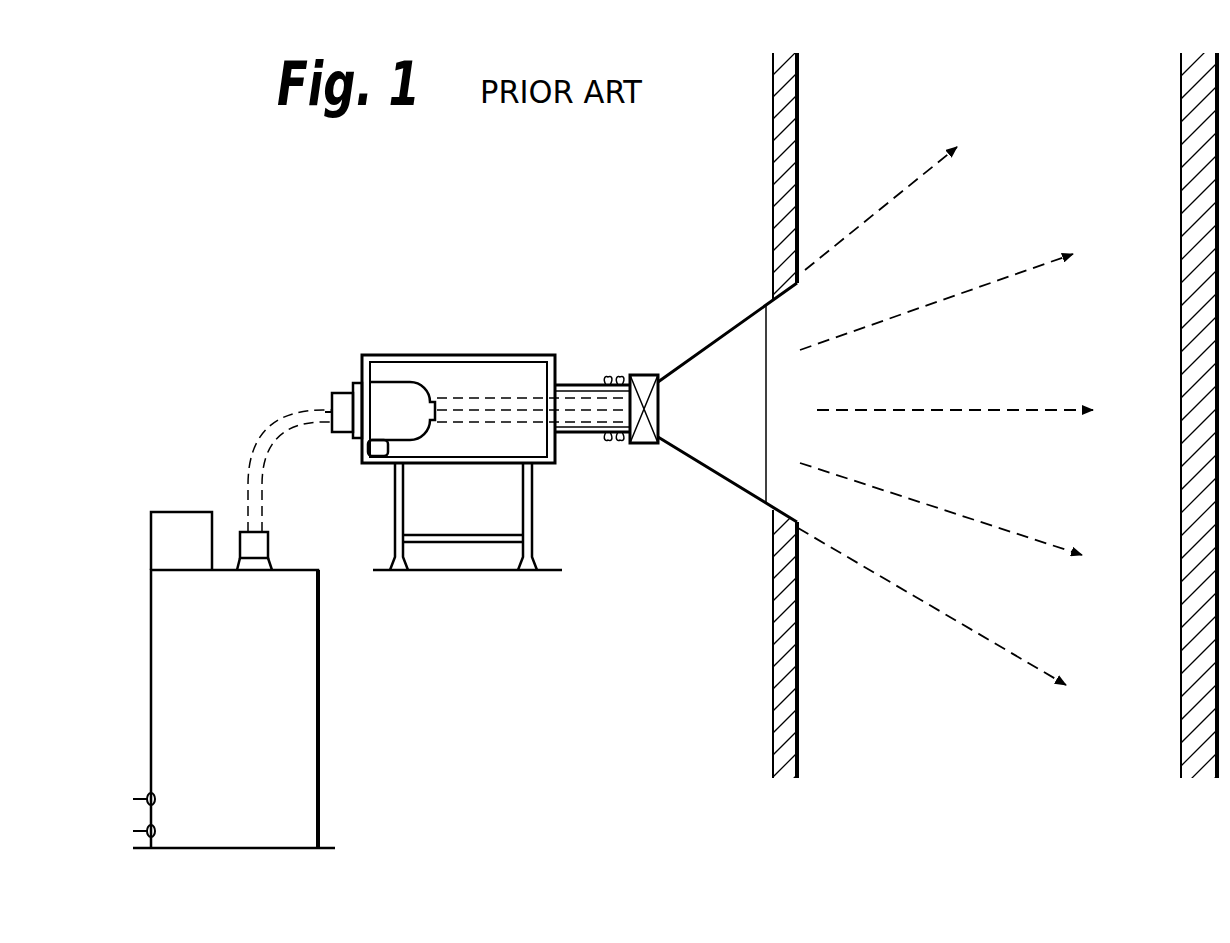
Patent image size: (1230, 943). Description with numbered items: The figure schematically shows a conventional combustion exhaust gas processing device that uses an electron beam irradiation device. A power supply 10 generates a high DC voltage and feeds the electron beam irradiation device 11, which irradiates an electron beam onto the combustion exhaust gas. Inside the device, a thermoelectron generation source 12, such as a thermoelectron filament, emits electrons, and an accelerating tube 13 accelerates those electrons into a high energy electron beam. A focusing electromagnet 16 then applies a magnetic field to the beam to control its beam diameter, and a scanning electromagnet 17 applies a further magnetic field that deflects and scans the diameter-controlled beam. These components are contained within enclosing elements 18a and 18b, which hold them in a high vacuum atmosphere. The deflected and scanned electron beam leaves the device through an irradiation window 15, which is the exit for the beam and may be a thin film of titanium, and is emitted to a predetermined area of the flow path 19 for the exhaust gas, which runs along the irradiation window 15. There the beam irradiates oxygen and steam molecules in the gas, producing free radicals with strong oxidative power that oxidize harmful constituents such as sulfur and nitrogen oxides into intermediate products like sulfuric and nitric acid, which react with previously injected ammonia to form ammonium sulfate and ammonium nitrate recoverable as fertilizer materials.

The power supply 10 is at (318, 727).
The electron beam irradiation device 11 is at (416, 334).
The thermoelectron generation source 12 is at (385, 447).
The accelerating tube 13 is at (496, 381).
The irradiation window 15 is at (775, 483).
The focusing electromagnet 16 is at (607, 376).
The scanning electromagnet 17 is at (656, 444).
The enclosing element 18a is at (740, 322).
The enclosing element 18b is at (556, 468).
The flow path 19 is at (946, 718).